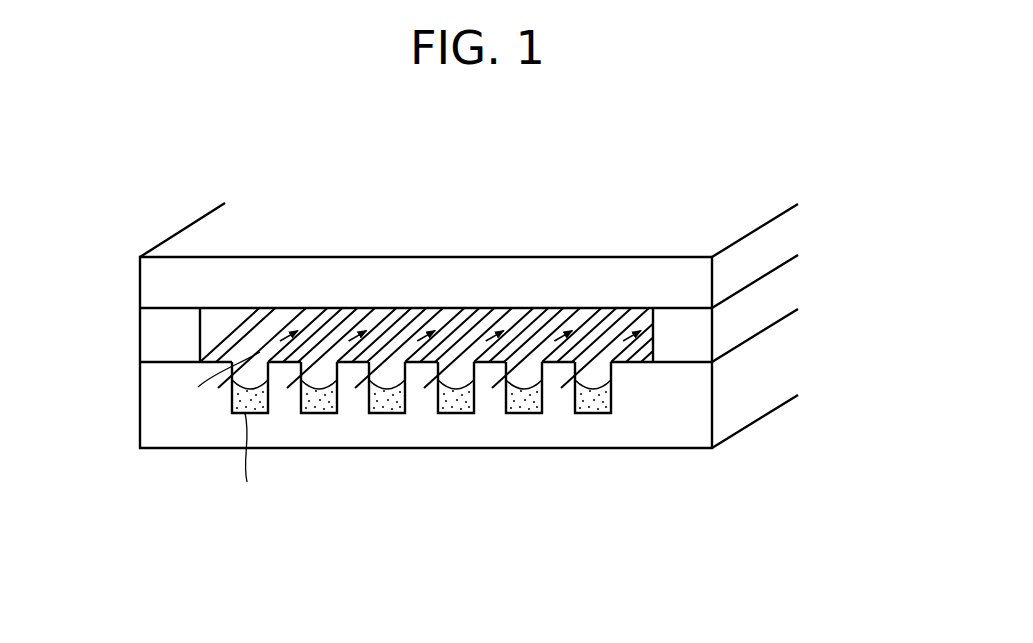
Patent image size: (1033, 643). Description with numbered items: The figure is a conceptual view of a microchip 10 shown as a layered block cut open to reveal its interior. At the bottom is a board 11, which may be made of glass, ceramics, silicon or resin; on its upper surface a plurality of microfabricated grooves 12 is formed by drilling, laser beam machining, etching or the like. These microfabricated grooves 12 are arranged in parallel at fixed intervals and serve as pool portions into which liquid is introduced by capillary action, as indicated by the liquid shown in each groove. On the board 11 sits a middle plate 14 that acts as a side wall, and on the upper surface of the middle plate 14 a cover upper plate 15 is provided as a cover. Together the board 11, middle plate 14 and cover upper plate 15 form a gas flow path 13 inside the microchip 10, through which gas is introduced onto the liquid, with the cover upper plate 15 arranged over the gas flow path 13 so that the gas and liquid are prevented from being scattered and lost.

The microchip 10 is at (623, 209).
The board 11 is at (465, 430).
The microfabricated grooves 12 is at (609, 397).
The gas flow path 13 is at (257, 325).
The middle plate 14 is at (168, 334).
The cover upper plate 15 is at (168, 278).